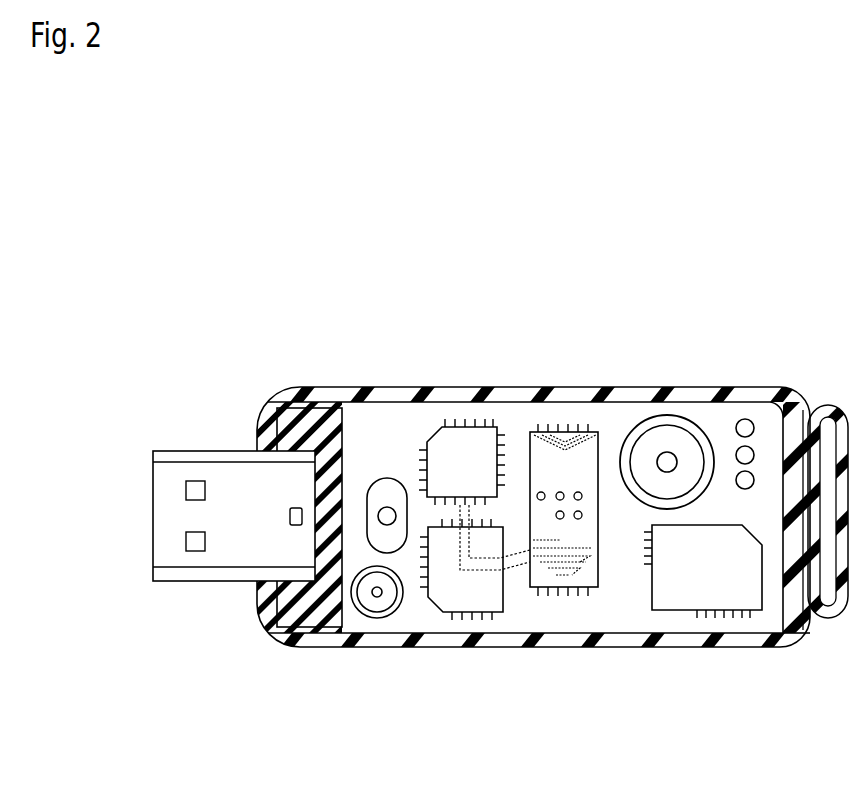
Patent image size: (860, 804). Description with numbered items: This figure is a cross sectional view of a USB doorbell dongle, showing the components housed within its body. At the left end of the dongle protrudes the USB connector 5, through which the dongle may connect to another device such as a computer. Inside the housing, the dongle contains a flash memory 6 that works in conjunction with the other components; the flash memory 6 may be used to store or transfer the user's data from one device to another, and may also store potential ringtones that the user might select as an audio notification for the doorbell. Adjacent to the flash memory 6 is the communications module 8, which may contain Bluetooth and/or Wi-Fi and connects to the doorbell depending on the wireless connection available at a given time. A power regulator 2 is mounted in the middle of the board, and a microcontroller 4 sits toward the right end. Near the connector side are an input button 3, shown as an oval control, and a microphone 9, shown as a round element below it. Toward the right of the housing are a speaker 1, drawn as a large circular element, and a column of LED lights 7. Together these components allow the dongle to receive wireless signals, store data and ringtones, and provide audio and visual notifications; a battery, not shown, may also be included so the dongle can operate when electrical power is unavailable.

The speaker 1 is at (648, 420).
The power regulator 2 is at (588, 577).
The input button 3 is at (385, 480).
The microcontroller 4 is at (728, 582).
The USB connector 5 is at (170, 502).
The flash memory 6 is at (458, 440).
The LED lights 7 is at (743, 417).
The communications module 8 is at (478, 598).
The microphone 9 is at (376, 605).